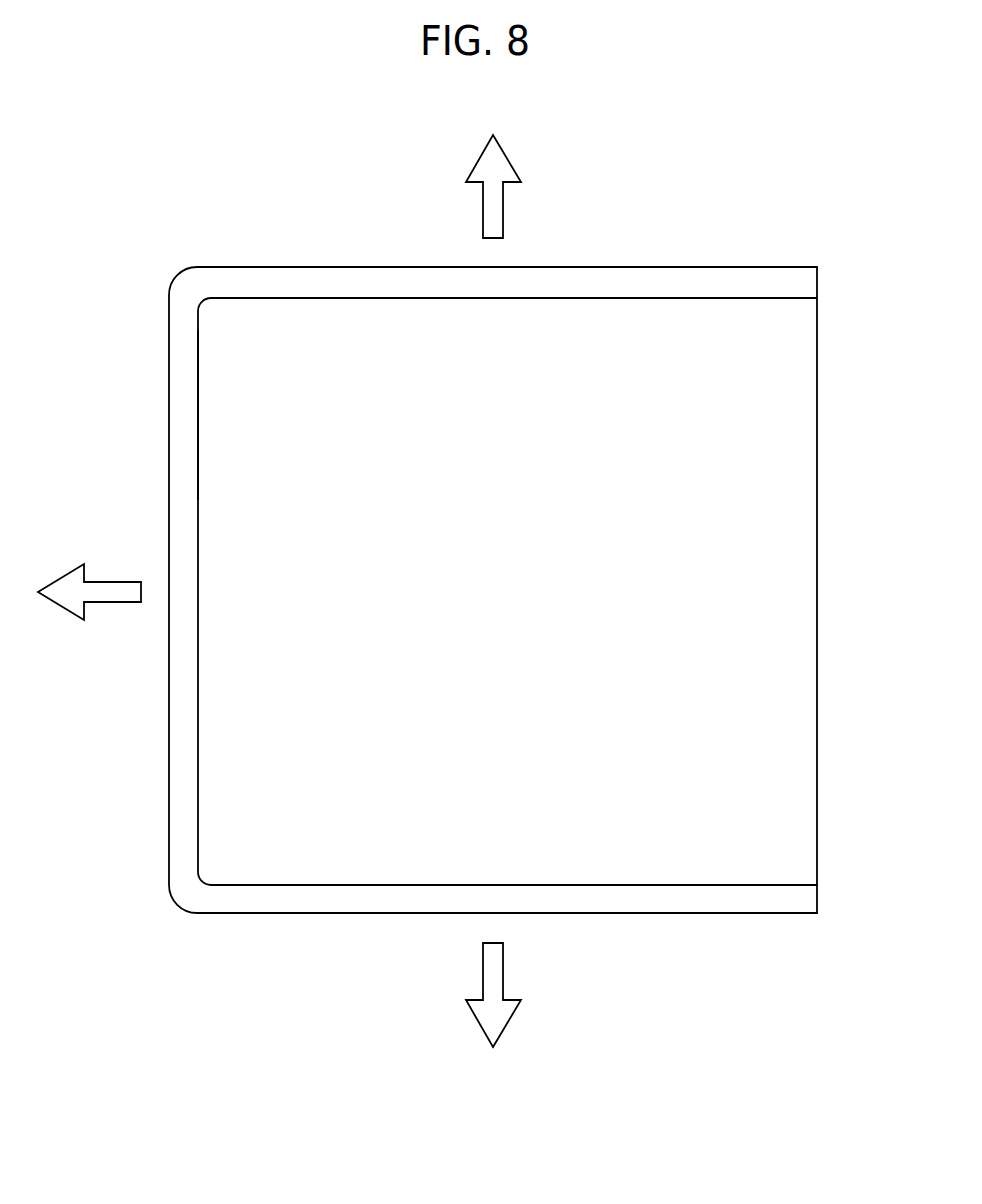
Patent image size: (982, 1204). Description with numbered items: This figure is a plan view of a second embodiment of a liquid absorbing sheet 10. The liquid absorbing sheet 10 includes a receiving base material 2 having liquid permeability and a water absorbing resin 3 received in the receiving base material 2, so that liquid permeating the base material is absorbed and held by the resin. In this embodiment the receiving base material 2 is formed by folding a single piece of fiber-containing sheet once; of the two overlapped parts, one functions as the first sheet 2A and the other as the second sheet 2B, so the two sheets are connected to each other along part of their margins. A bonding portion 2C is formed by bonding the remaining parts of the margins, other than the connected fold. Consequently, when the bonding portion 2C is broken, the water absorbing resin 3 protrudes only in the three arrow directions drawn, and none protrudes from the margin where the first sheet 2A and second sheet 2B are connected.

The liquid absorbing sheet 10 is at (722, 169).
The receiving base material 2 is at (740, 595).
The first sheet 2A is at (390, 333).
The second sheet 2B is at (604, 333).
The bonding portion 2C is at (187, 400).
The water absorbing resin 3 is at (288, 333).